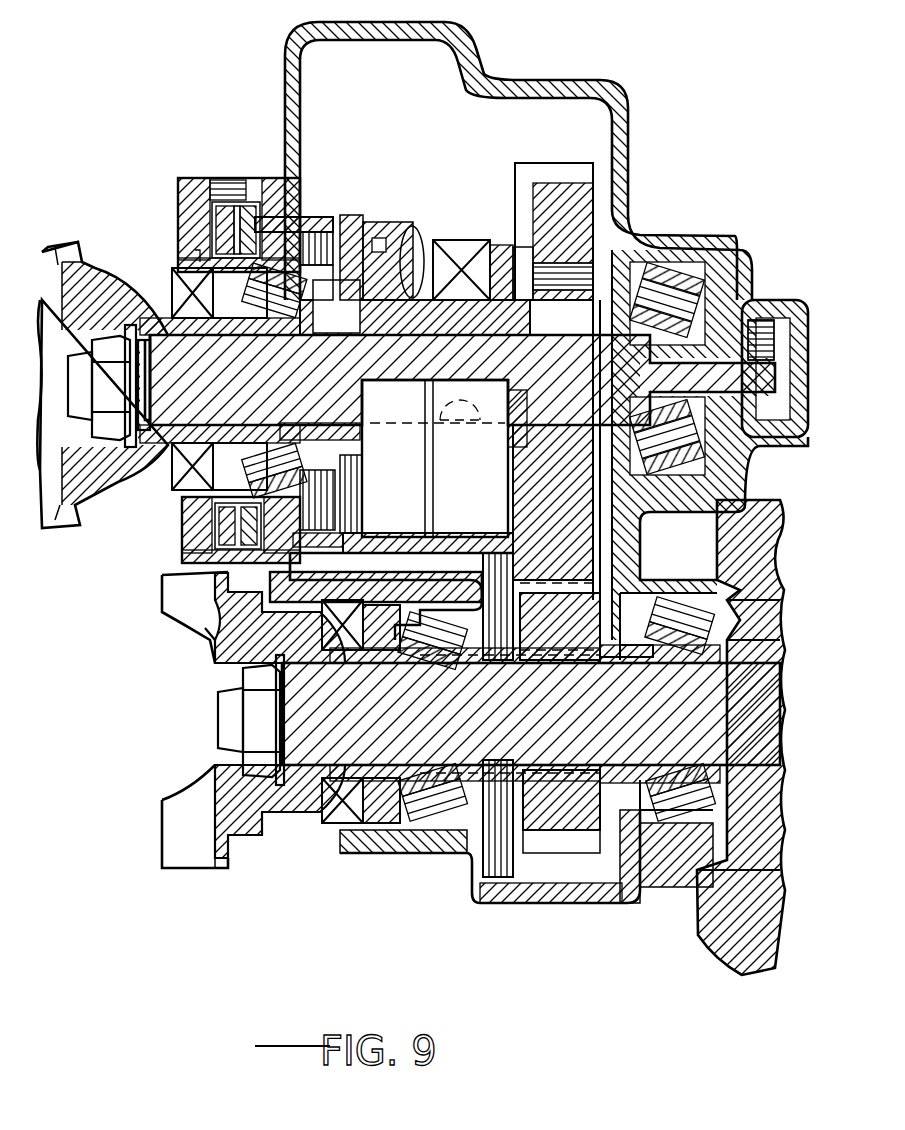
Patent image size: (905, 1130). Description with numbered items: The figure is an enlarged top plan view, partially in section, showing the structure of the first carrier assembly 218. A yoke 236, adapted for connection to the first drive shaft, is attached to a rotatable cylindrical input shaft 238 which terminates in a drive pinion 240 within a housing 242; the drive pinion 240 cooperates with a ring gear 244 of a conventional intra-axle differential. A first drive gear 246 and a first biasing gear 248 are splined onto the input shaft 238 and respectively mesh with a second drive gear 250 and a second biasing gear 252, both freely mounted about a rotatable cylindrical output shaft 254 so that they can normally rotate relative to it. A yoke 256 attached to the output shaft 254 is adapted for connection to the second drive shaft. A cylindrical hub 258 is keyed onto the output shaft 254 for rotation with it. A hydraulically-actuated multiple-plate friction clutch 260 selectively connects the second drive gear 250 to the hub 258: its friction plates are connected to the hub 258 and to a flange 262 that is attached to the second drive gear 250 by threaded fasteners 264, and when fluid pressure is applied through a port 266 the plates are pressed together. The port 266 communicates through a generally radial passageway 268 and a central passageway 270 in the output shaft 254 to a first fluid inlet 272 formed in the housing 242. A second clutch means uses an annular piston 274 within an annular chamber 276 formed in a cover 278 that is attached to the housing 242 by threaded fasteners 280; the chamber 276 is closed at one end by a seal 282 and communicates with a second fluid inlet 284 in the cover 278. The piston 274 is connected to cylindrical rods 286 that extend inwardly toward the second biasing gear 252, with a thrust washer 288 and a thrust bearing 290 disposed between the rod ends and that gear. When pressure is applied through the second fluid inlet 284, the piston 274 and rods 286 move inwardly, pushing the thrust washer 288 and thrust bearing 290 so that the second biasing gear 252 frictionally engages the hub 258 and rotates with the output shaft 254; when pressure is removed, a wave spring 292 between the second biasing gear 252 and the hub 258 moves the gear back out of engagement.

The first carrier assembly 218 is at (139, 150).
The yoke 236 is at (163, 828).
The input shaft 238 is at (315, 737).
The drive pinion 240 is at (705, 578).
The housing 242 is at (548, 897).
The ring gear 244 is at (714, 855).
The first drive gear 246 is at (575, 812).
The first biasing gear 248 is at (480, 888).
The second drive gear 250 is at (637, 158).
The second biasing gear 252 is at (423, 242).
The output shaft 254 is at (152, 292).
The yoke 256 is at (62, 252).
The hub 258 is at (481, 325).
The multiple-plate friction clutch 260 is at (465, 255).
The flange 262 is at (526, 228).
The threaded fasteners 264 is at (593, 255).
The port 266 is at (396, 362).
The radial passageway 268 is at (414, 258).
The central passageway 270 is at (603, 378).
The first fluid inlet 272 is at (768, 303).
The annular piston 274 is at (265, 235).
The annular chamber 276 is at (198, 250).
The cover 278 is at (292, 212).
The threaded fasteners 280 is at (305, 232).
The seal 282 is at (182, 528).
The second fluid inlet 284 is at (222, 180).
The cylindrical rods 286 is at (212, 638).
The thrust washer 288 is at (322, 225).
The thrust bearing 290 is at (340, 228).
The wave spring 292 is at (366, 446).